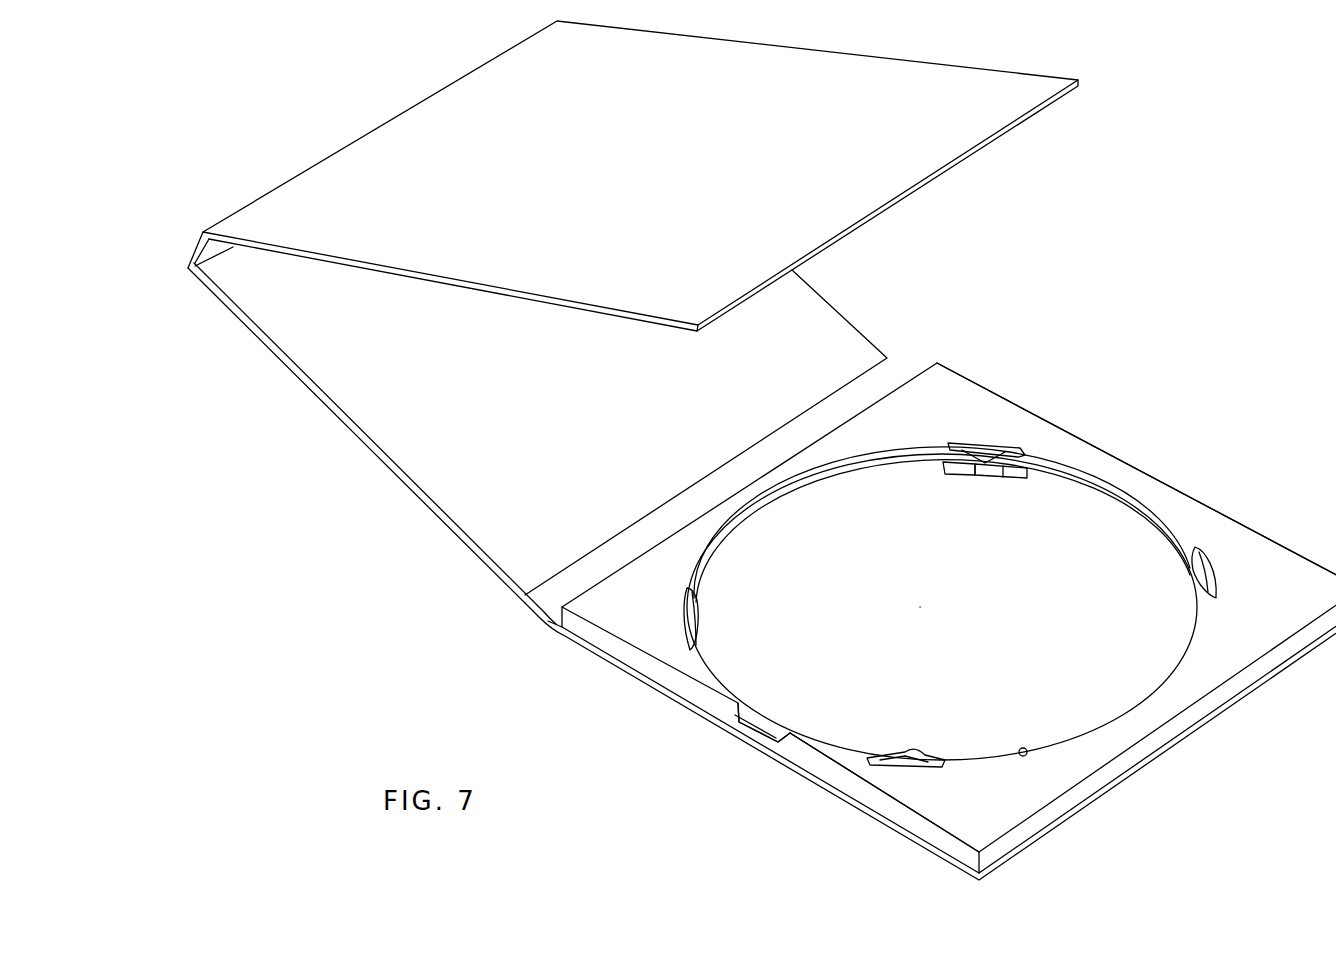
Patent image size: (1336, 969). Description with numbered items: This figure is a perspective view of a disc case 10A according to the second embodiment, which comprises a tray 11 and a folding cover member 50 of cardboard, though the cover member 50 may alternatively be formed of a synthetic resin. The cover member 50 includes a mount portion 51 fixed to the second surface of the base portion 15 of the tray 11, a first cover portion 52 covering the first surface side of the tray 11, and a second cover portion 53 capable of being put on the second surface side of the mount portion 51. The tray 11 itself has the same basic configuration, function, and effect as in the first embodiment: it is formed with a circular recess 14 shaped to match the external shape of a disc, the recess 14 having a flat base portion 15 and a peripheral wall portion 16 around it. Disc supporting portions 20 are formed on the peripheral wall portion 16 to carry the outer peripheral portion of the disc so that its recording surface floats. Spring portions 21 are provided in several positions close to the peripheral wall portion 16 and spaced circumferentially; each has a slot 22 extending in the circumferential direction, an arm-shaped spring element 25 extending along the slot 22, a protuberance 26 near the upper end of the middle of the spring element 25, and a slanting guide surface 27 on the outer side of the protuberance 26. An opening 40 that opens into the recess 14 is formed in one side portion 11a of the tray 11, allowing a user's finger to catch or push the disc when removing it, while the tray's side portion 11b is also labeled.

The disc case 10A is at (1170, 298).
The tray 11 is at (1140, 472).
The one side portion of the tray 11a is at (812, 768).
The right side of tray 11b is at (1220, 527).
The recess 14 is at (876, 608).
The base portion 15 is at (790, 714).
The peripheral wall portion 16 is at (1027, 757).
The disc supporting portions 20 is at (795, 507).
The spring portions 21 is at (1010, 438).
The slot 22 is at (972, 447).
The spring element 25 is at (1003, 480).
The protuberance 26 is at (973, 487).
The slanting guide surface 27 is at (945, 474).
The opening 40 is at (738, 733).
The cover member 50 is at (336, 437).
The mount portion 51 is at (670, 705).
The first cover portion 52 is at (432, 512).
The second cover portion 53 is at (880, 197).